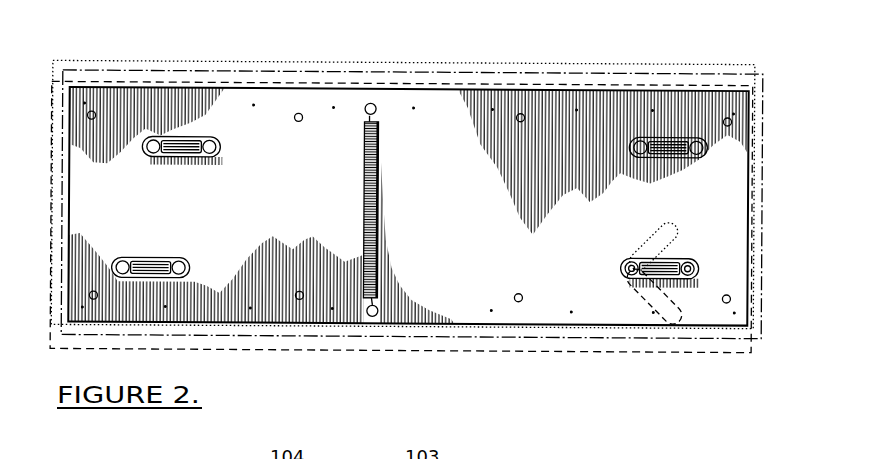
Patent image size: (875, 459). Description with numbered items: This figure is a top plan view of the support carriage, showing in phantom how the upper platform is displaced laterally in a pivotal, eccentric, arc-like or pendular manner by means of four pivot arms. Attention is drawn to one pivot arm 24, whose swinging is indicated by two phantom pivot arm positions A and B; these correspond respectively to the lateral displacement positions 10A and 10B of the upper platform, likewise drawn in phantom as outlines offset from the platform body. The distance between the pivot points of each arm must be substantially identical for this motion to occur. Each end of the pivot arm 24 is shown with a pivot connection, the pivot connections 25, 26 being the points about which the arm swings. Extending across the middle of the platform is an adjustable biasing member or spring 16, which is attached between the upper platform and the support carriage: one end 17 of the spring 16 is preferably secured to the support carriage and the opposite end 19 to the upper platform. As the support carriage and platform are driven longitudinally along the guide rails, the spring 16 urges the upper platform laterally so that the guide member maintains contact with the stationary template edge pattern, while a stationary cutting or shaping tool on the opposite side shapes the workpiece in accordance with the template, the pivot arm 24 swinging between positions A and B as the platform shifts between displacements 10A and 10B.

The lateral displacement position of the upper platform 10A is at (703, 352).
The lateral displacement position of the upper platform 10B is at (688, 63).
The biasing spring 16 is at (364, 152).
The spring end 17 is at (369, 104).
The spring end 19 is at (377, 323).
The pivot arm 24 is at (718, 294).
The left eyelet 25 is at (628, 271).
The right eyelet 26 is at (691, 267).
The phantom pivot arm position A is at (654, 296).
The phantom pivot arm position B is at (653, 246).